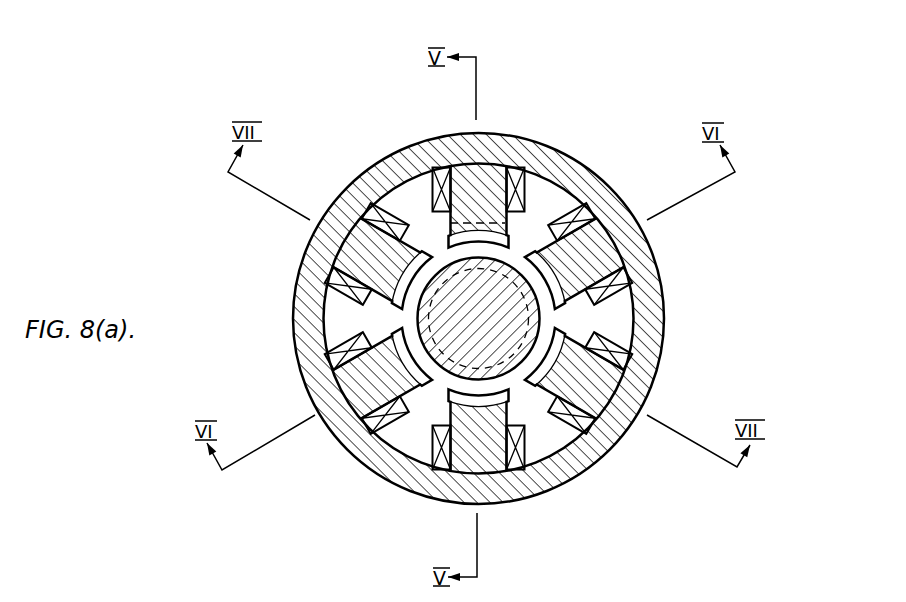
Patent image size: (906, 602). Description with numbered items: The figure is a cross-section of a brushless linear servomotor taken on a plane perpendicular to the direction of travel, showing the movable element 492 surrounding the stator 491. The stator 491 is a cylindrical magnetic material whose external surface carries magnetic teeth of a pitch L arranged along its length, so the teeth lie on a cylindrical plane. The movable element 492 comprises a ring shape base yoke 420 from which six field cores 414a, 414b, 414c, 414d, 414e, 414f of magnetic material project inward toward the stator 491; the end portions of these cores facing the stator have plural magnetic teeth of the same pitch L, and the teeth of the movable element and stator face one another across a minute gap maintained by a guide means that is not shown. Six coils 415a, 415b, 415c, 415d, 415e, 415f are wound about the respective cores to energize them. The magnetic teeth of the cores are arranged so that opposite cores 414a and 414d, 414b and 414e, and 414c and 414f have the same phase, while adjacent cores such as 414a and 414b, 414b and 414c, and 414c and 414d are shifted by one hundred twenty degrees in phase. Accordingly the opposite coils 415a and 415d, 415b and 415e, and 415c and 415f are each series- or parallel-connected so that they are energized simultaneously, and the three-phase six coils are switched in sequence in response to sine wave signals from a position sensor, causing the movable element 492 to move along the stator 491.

The field core 414a is at (477, 192).
The field core 414b is at (578, 258).
The field core 414c is at (577, 380).
The field core 414d is at (470, 470).
The field core 414e is at (375, 380).
The field core 414f is at (368, 252).
The coil 415a is at (438, 168).
The coil 415b is at (583, 200).
The coil 415c is at (598, 357).
The coil 415d is at (507, 470).
The coil 415e is at (380, 425).
The coil 415f is at (337, 290).
The stator 491 is at (499, 352).
The ring shape base yoke 420 is at (583, 467).
The movable element 492 is at (617, 450).